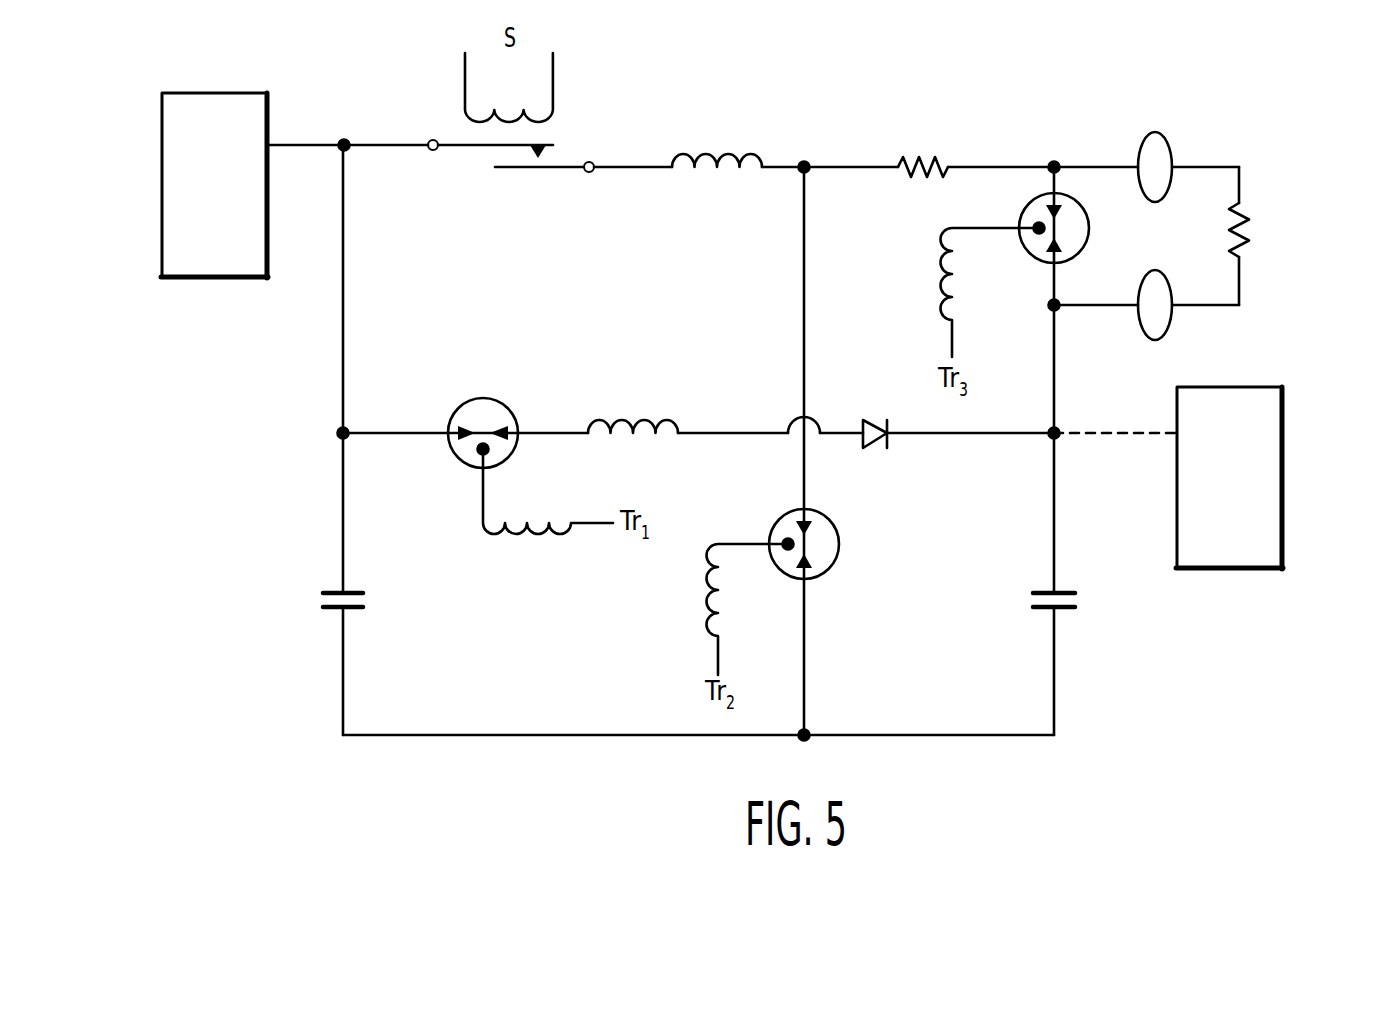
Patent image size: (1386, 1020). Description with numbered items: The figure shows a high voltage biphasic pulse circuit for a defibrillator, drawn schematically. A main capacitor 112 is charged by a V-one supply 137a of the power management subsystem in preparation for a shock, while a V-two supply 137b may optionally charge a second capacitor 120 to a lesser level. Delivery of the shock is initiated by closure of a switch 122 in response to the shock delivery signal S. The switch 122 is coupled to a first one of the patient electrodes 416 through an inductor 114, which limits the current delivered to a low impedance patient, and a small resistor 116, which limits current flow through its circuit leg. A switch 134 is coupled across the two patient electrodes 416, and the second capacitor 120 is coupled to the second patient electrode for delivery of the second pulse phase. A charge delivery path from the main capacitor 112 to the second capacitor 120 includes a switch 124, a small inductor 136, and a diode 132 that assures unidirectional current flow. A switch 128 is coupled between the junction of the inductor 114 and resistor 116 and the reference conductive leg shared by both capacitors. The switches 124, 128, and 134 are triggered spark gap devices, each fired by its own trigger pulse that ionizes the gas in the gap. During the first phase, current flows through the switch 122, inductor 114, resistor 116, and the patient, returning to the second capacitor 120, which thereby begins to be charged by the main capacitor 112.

The V1 supply 137a is at (211, 278).
The V2 supply 137b is at (1282, 522).
The main capacitor 112 is at (336, 590).
The inductor 114 is at (707, 152).
The small resistor 116 is at (920, 157).
The second capacitor 120 is at (1068, 610).
The switch 122 is at (563, 166).
The switch 124 is at (485, 398).
The switch 128 is at (832, 520).
The diode 132 is at (870, 418).
The switch 134 is at (1032, 255).
The small inductor 136 is at (625, 418).
The patient electrodes 416 is at (1173, 250).